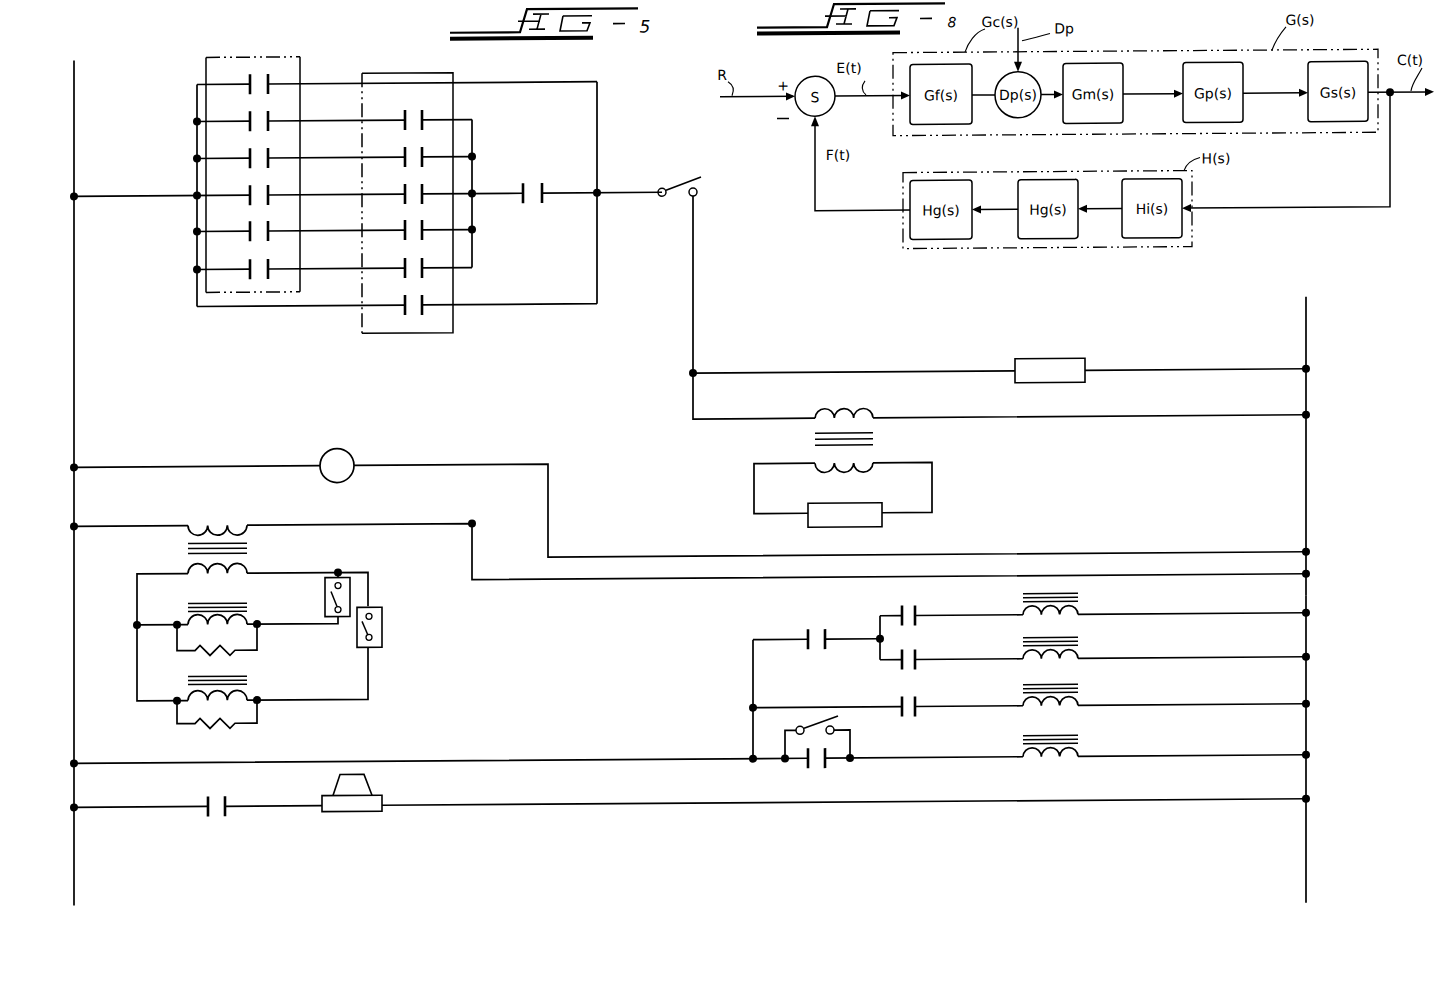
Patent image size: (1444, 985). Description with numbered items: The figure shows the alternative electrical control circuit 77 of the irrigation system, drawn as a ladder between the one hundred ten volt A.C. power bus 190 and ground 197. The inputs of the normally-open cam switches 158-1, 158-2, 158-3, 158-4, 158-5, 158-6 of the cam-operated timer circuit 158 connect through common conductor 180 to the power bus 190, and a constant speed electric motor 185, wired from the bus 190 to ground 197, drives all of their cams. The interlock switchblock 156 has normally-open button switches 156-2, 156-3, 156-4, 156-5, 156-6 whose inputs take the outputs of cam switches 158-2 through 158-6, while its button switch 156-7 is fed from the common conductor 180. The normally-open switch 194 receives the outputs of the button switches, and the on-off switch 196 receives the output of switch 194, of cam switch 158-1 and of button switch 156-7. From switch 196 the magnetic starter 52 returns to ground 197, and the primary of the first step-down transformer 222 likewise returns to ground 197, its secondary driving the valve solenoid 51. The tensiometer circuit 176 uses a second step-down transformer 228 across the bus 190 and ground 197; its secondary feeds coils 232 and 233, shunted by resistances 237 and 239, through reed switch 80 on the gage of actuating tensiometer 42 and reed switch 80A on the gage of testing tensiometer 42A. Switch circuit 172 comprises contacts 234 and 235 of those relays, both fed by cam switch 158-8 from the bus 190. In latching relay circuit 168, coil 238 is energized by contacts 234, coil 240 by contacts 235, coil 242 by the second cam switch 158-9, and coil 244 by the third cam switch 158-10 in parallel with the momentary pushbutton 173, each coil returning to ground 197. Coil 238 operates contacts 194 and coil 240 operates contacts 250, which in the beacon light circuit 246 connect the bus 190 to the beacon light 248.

The A.C. power bus 190 is at (76, 88).
The common conductor 180 is at (133, 190).
The cam-operated timer circuit 158 is at (277, 46).
The N.O. cam switch 158-1 is at (270, 80).
The N.O. cam switch 158-2 is at (270, 117).
The N.O. cam switch 158-3 is at (270, 154).
The N.O. cam switch 158-4 is at (270, 191).
The N.O. cam switch 158-5 is at (270, 227).
The N.O. cam switch 158-6 is at (270, 265).
The interlock switchblock 156 is at (410, 60).
The N.O. button switch 156-2 is at (424, 118).
The N.O. button switch 156-3 is at (424, 155).
The N.O. button switch 156-4 is at (424, 192).
The N.O. button switch 156-5 is at (424, 228).
The N.O. button switch 156-6 is at (424, 266).
The N.O. button switch 156-7 is at (424, 303).
The N.O. switch 194 is at (548, 191).
The on-off switch 196 is at (680, 185).
The magnetic starter 52 is at (1047, 360).
The first step-down transformer 222 is at (872, 437).
The solenoid 51 is at (875, 528).
The constant speed electric motor 185 is at (347, 452).
The second step-down transformer 228 is at (248, 547).
The relay coil 232 is at (188, 605).
The relay coil 233 is at (188, 682).
The resistance 237 is at (229, 651).
The resistance 239 is at (228, 722).
The magnetically-actuated reed switch 80 is at (325, 598).
The magnetically-actuated reed switch 80A is at (358, 628).
The actuating tensiometer 42 is at (354, 585).
The testing tensiometer 42A is at (386, 623).
The tensiometer circuit 176 is at (357, 706).
The beacon light 248 is at (368, 788).
The N.O. contacts 250 is at (226, 815).
The beacon light circuit 246 is at (312, 831).
The switch circuit 172 is at (870, 618).
The first cam switch 158-8 is at (823, 637).
The normally-open contacts 234 is at (910, 607).
The N.O. contacts 235 is at (912, 652).
The second cam switch 158-9 is at (910, 697).
The N.O. momentary-contact pushbutton switch 173 is at (818, 723).
The third N.O. cam switch 158-10 is at (818, 768).
The latching relay coil 238 is at (1078, 594).
The latching relay coil 240 is at (1078, 641).
The latching relay coil 242 is at (1078, 688).
The latching relay coil 244 is at (1078, 731).
The latching relay circuit 168 is at (1170, 603).
The electrical control circuit 77 is at (1329, 348).
The ground 197 is at (1308, 462).